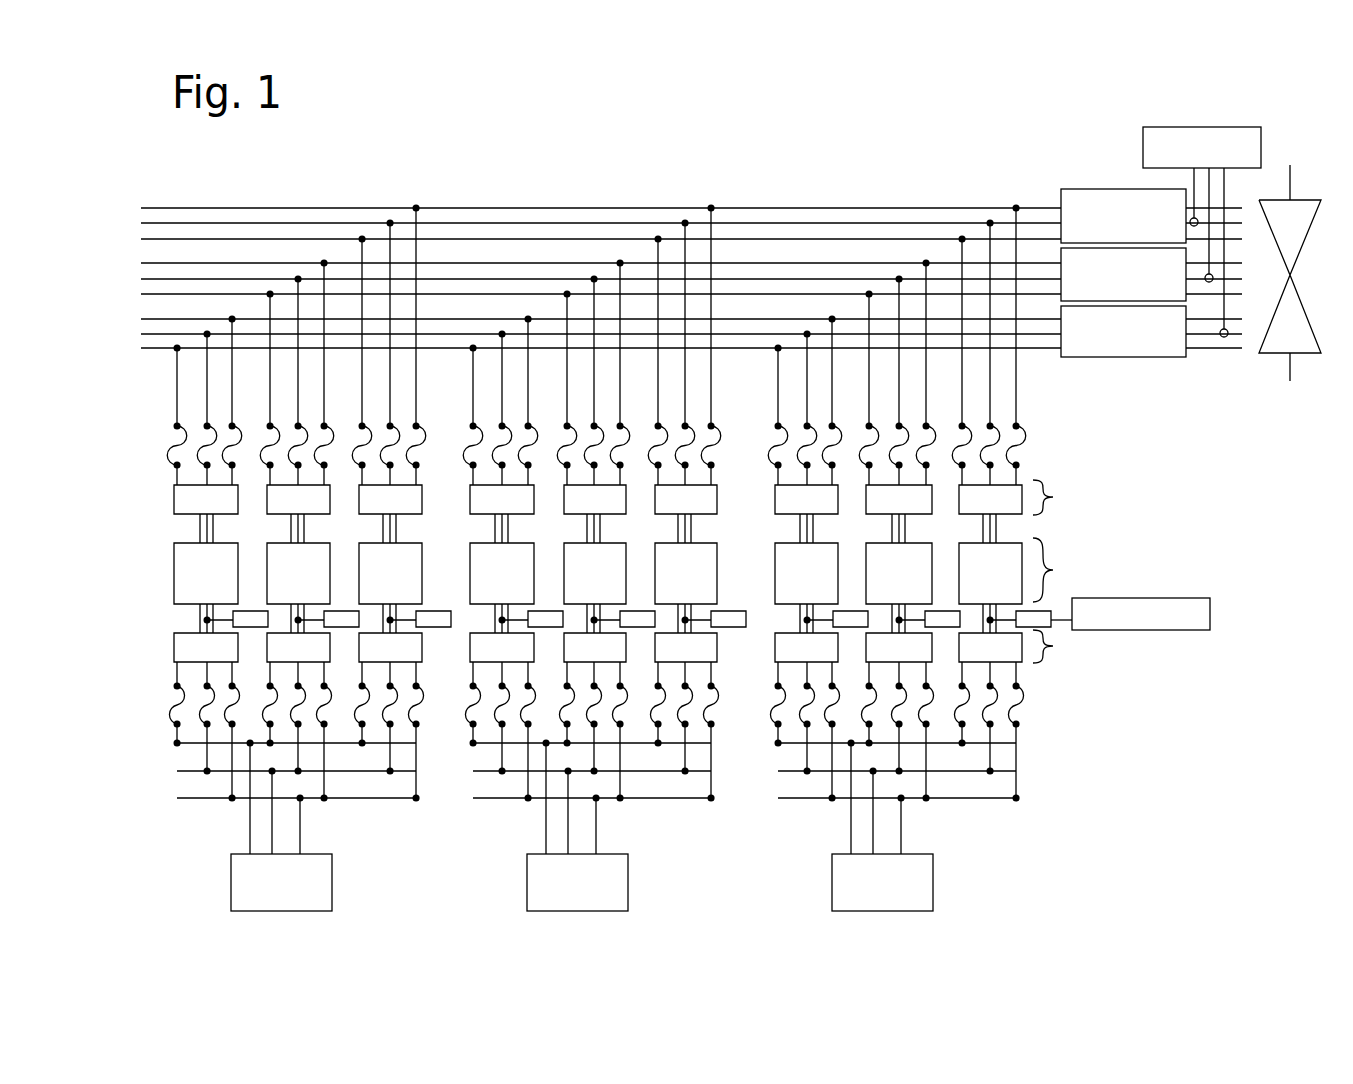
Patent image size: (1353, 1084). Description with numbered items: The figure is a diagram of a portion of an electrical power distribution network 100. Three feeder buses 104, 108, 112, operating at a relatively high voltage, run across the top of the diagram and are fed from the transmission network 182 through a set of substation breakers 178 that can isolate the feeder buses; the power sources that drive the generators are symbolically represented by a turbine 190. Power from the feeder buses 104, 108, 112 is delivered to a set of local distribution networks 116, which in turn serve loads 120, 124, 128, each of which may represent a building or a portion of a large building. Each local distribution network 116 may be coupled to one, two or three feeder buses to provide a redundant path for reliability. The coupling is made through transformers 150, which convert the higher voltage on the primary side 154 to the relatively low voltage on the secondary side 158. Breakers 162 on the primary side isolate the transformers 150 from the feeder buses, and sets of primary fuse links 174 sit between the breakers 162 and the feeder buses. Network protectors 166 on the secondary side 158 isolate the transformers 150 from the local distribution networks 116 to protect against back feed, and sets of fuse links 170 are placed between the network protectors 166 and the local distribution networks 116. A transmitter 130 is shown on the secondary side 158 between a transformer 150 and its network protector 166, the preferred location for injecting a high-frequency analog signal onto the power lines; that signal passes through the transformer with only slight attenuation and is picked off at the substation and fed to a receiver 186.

The network 100 is at (540, 168).
The feeder bus 104 is at (138, 197).
The feeder bus 108 is at (138, 252).
The feeder bus 112 is at (138, 308).
The local distribution networks 116 is at (157, 740).
The load 120 is at (278, 911).
The load 124 is at (574, 911).
The load 128 is at (879, 911).
The transmitter 130 is at (1210, 622).
The transformers 150 is at (157, 543).
The primary side 154 is at (157, 518).
The secondary side 158 is at (157, 608).
The breakers 162 is at (157, 483).
The network protectors 166 is at (157, 633).
The fuse links 170 is at (157, 680).
The primary fuse links 174 is at (157, 423).
The substation breakers 178 is at (1061, 363).
The transmission network 182 is at (1190, 363).
The receiver 186 is at (1195, 127).
The turbine 190 is at (1257, 380).